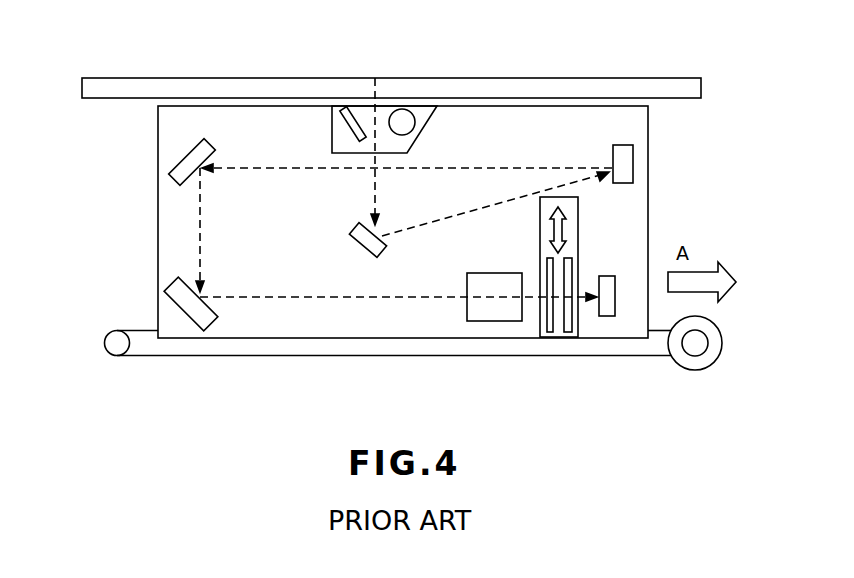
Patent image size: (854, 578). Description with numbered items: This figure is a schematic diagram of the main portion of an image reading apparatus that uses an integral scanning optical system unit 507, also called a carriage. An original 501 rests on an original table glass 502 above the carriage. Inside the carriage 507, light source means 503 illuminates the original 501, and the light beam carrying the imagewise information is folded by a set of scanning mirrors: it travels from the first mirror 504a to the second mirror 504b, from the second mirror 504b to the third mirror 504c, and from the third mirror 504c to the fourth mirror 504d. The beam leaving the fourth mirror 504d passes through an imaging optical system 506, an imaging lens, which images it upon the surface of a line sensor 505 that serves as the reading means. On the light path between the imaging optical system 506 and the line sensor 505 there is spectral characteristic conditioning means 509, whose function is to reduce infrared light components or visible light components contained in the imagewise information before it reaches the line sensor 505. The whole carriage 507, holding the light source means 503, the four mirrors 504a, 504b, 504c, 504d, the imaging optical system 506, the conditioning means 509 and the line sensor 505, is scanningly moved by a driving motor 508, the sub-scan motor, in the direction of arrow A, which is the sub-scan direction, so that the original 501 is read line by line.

The original 501 is at (341, 77).
The original table glass 502 is at (559, 89).
The light source means 503 is at (405, 110).
The first mirror 504a is at (352, 247).
The second mirror 504b is at (625, 143).
The third mirror 504c is at (182, 157).
The fourth mirror 504d is at (190, 320).
The line sensor 505 is at (605, 310).
The imaging optical system 506 is at (488, 322).
The integral scanning optical system unit 507 is at (648, 168).
The driving motor 508 is at (415, 359).
The spectral characteristic conditioning means 509 is at (578, 247).